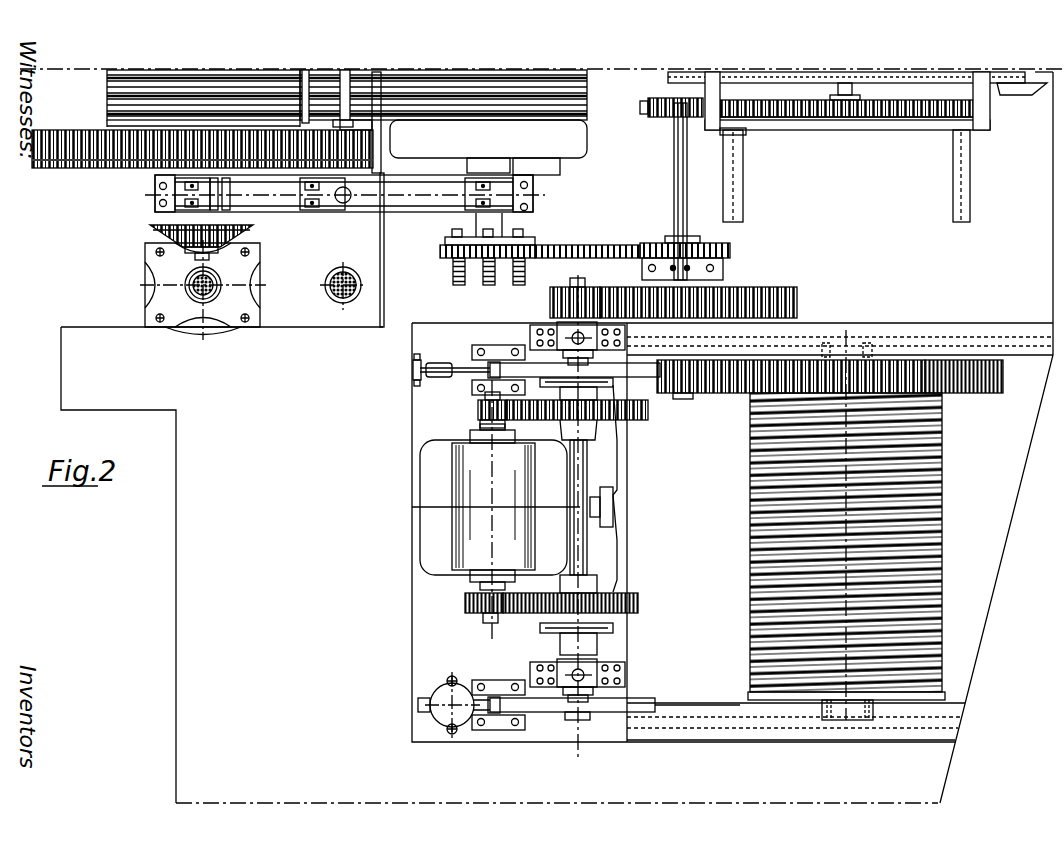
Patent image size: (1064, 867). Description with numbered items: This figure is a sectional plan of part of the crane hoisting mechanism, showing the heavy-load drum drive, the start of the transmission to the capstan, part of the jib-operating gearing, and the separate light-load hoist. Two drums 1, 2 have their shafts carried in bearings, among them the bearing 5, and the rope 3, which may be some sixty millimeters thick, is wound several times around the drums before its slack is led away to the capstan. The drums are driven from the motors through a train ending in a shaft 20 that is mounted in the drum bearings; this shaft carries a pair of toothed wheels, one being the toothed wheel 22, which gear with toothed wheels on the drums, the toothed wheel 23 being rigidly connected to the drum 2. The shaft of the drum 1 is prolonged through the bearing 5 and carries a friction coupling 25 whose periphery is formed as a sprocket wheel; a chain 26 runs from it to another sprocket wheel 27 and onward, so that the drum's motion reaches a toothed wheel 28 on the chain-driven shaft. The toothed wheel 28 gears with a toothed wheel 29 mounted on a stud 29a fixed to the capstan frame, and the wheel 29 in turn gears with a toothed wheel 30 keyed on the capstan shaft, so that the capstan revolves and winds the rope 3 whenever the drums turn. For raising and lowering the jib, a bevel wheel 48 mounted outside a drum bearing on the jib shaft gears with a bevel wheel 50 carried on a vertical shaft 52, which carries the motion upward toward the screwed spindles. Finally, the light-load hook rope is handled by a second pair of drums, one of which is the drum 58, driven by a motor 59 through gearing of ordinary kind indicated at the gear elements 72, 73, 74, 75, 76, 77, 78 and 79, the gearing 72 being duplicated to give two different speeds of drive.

The drum 1 is at (573, 147).
The drum 2 is at (113, 128).
The rope 3 is at (582, 90).
The bearing 5 is at (280, 202).
The shaft 20 is at (345, 78).
The toothed wheel 22 is at (353, 147).
The toothed wheel 23 is at (90, 157).
The friction coupling 25 is at (500, 238).
The chain 26 is at (593, 242).
The sprocket wheel 27 is at (732, 247).
The toothed wheel 28 is at (673, 118).
The toothed wheel 29 is at (652, 103).
The stud 29a is at (740, 128).
The toothed wheel 30 is at (800, 117).
The bevel wheel 48 is at (152, 232).
The bevel wheel 50 is at (174, 290).
The vertical shaft 52 is at (143, 260).
The drum 58 is at (750, 567).
The motor 59 is at (496, 507).
The gearing 72 is at (476, 613).
The gearing 73 is at (478, 407).
The gearing 74 is at (640, 603).
The gearing 75 is at (643, 413).
The gearing 76 is at (580, 298).
The gearing 77 is at (757, 297).
The gearing 78 is at (697, 393).
The gearing 79 is at (988, 395).